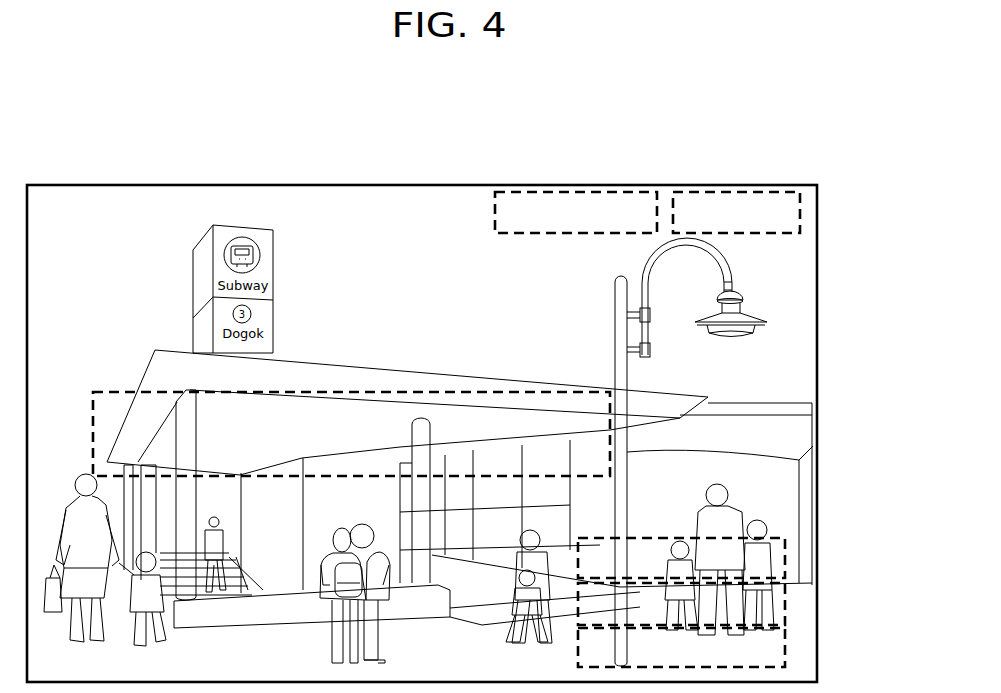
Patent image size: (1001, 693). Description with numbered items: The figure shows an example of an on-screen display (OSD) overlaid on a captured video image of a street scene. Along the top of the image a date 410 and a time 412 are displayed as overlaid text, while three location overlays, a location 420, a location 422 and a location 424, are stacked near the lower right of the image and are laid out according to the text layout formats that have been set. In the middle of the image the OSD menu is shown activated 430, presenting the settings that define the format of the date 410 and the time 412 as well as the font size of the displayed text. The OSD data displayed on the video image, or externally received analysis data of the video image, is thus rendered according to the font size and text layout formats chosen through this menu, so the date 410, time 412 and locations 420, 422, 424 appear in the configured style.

The date 410 is at (578, 192).
The time 412 is at (722, 192).
The location 420 is at (785, 558).
The location 422 is at (785, 603).
The location 424 is at (785, 647).
The activated OSD menu 430 is at (368, 392).